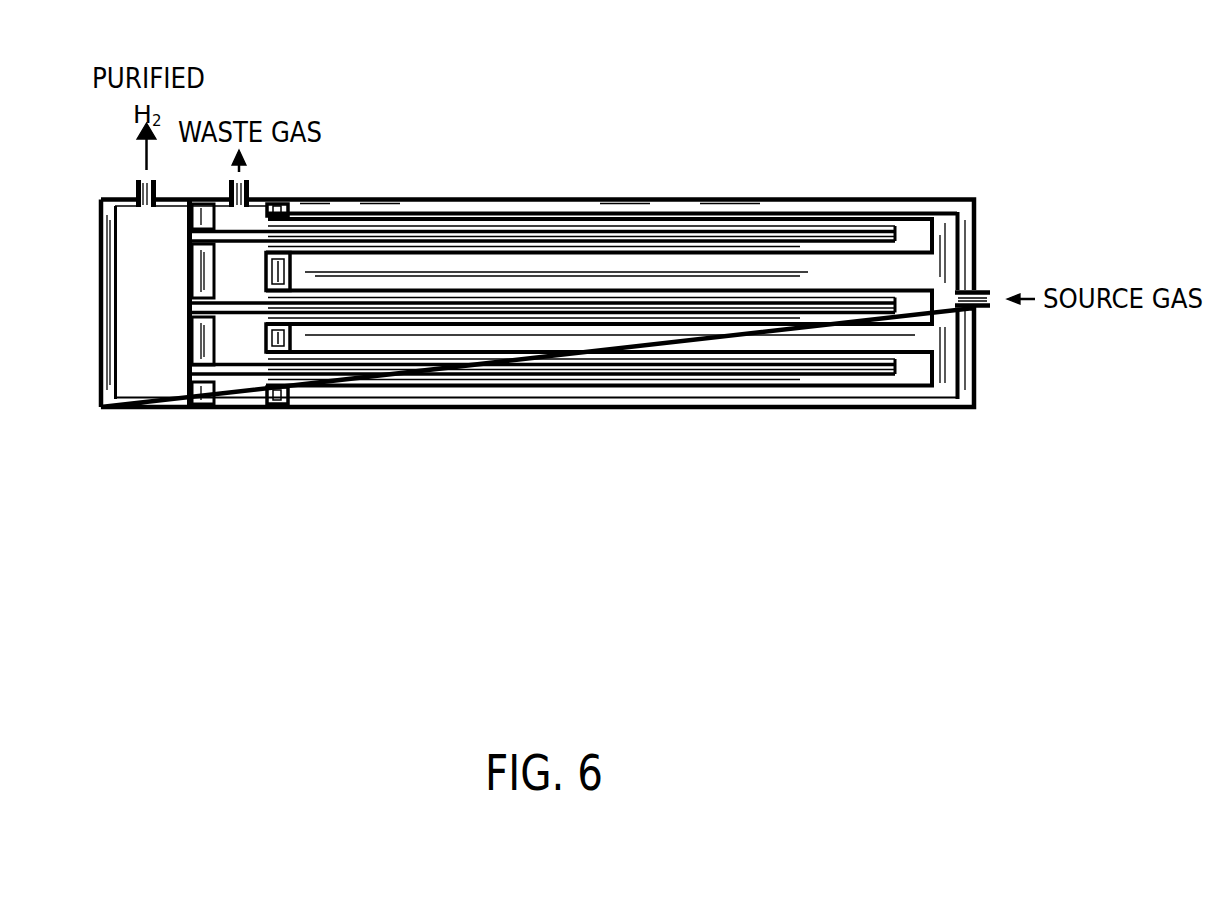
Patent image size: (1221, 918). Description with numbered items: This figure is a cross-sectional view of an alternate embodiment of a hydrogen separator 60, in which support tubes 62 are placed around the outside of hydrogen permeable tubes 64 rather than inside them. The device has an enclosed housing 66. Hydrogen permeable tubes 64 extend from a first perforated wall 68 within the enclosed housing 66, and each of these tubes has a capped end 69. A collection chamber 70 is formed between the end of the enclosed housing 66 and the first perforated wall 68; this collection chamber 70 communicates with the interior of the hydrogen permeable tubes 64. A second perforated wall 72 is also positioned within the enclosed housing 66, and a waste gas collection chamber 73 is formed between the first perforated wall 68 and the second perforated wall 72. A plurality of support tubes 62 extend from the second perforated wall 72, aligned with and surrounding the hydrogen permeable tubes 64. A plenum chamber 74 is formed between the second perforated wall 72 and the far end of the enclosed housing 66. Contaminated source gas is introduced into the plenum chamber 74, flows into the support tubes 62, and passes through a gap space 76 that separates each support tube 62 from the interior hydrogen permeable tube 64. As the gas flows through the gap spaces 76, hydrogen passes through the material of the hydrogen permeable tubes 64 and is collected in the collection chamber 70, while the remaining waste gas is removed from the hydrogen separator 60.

The hydrogen separator 60 is at (542, 162).
The support tubes 62 is at (850, 387).
The hydrogen permeable tubes 64 is at (773, 378).
The enclosed housing 66 is at (681, 198).
The first perforated wall 68 is at (181, 398).
The capped ends 69 is at (893, 238).
The collection chamber 70 is at (135, 323).
The second perforated wall 72 is at (270, 408).
The waste gas collection chamber 73 is at (238, 392).
The plenum chamber 74 is at (563, 396).
The gap space 76 is at (695, 383).